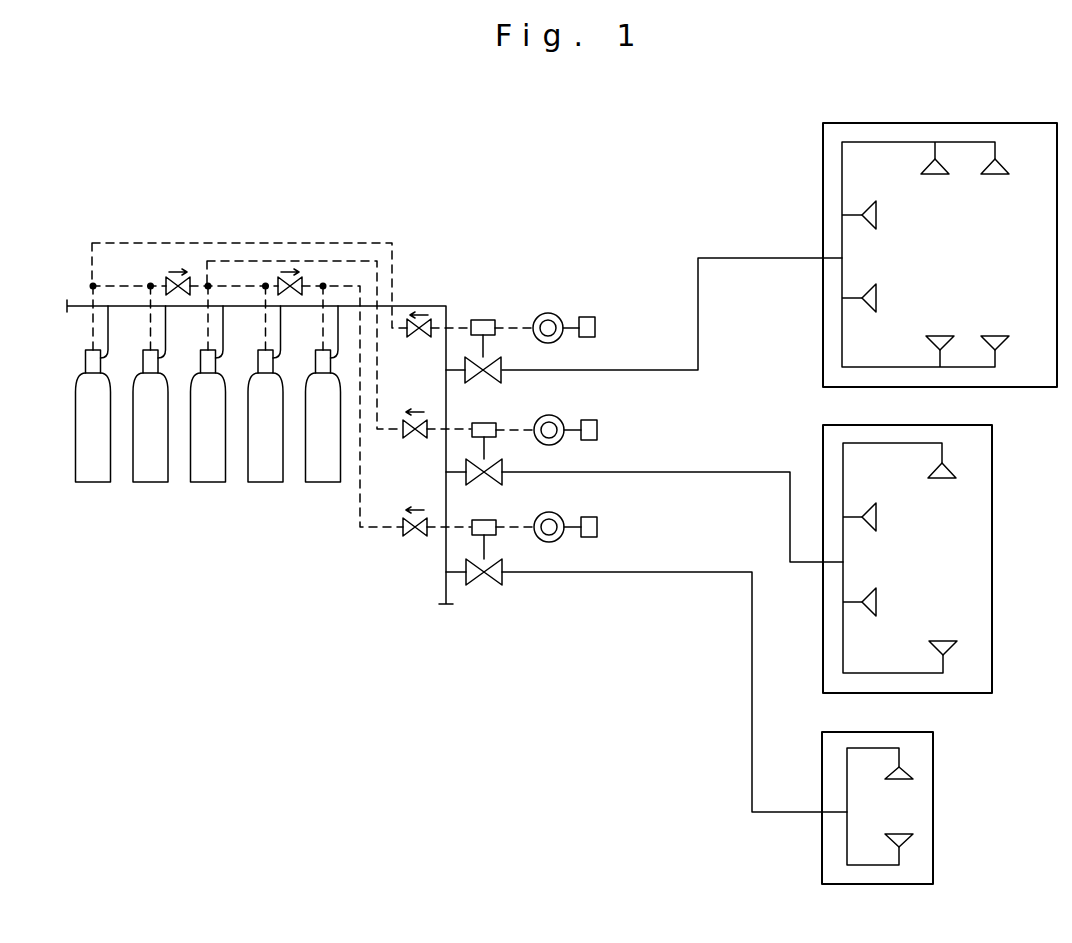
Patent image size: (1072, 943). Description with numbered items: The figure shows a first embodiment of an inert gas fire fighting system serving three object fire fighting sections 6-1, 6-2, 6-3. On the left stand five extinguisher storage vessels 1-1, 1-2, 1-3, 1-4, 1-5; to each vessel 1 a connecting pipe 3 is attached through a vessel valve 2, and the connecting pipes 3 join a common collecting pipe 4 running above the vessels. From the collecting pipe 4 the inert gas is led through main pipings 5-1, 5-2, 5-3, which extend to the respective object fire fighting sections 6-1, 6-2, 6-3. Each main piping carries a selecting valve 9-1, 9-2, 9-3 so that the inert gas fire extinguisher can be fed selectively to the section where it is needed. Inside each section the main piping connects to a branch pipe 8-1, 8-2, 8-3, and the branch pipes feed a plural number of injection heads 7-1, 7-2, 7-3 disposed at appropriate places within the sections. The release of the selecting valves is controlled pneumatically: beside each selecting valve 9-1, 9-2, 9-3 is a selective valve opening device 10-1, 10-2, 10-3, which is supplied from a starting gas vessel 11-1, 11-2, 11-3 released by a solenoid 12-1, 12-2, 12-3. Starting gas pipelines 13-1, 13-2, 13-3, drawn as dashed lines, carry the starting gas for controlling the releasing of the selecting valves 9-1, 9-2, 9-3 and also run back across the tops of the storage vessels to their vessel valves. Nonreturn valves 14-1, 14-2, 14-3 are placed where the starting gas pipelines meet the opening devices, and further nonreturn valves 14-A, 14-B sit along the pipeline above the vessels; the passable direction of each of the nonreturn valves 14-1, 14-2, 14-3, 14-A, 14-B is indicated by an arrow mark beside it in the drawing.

The extinguisher storage vessel 1 is at (70, 406).
The vessel valve 2 is at (86, 360).
The connecting pipe 3 is at (108, 326).
The collecting pipe 4 is at (126, 306).
The extinguisher storage vessel 1-1 is at (73, 434).
The extinguisher storage vessel 1-2 is at (144, 478).
The extinguisher storage vessel 1-3 is at (201, 478).
The extinguisher storage vessel 1-4 is at (259, 478).
The extinguisher storage vessel 1-5 is at (318, 478).
The main piping 5-1 is at (698, 357).
The main piping 5-2 is at (722, 471).
The main piping 5-3 is at (722, 572).
The object fire fighting section 6-1 is at (908, 255).
The object fire fighting section 6-2 is at (928, 544).
The object fire fighting section 6-3 is at (897, 792).
The injection heads 7-1 is at (995, 176).
The injection heads 7-2 is at (952, 467).
The injection heads 7-3 is at (906, 771).
The branch pipe 8-1 is at (895, 142).
The branch pipe 8-2 is at (892, 443).
The branch pipe 8-3 is at (848, 790).
The selecting valve 9-1 is at (465, 378).
The selecting valve 9-2 is at (489, 480).
The selecting valve 9-3 is at (488, 584).
The selective valve opening device 10-1 is at (487, 320).
The selective valve opening device 10-2 is at (485, 423).
The selective valve opening device 10-3 is at (472, 530).
The starting gas vessel 11-1 is at (560, 334).
The starting gas vessel 11-2 is at (561, 437).
The starting gas vessel 11-3 is at (561, 534).
The solenoid 12-1 is at (595, 325).
The solenoid 12-2 is at (597, 428).
The solenoid 12-3 is at (597, 527).
The starting gas pipeline 13-1 is at (393, 290).
The starting gas pipeline 13-2 is at (382, 266).
The starting gas pipeline 13-3 is at (343, 286).
The nonreturn valve 14-1 is at (418, 338).
The nonreturn valve 14-2 is at (419, 440).
The nonreturn valve 14-3 is at (410, 537).
The nonreturn valve 14-A is at (195, 282).
The nonreturn valve 14-B is at (303, 282).